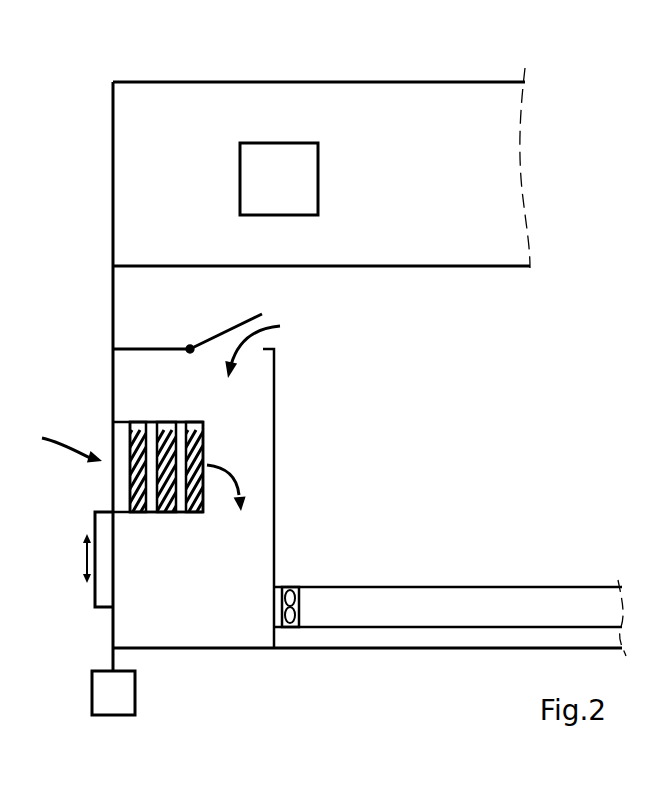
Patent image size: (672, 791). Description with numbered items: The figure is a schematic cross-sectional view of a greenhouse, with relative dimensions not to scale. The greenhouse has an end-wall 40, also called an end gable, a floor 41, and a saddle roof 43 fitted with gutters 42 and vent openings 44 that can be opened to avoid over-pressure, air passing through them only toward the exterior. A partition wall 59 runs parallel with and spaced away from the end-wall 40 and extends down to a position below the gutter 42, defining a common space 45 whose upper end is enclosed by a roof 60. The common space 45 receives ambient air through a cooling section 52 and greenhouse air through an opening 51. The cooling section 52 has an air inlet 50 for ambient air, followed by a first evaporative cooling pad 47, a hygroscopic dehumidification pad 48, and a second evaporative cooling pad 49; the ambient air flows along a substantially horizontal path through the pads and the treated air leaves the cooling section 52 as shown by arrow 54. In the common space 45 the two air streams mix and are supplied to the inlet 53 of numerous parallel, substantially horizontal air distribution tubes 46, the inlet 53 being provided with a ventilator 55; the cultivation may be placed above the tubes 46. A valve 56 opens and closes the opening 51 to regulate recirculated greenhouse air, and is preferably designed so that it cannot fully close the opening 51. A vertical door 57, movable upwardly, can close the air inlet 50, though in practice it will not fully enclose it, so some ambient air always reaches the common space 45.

The end-wall 40 is at (112, 333).
The floor 41 is at (232, 650).
The gutter 42 is at (508, 268).
The saddle roof 43 is at (362, 82).
The vent opening 44 is at (278, 145).
The common space 45 is at (125, 628).
The air distribution tube 46 is at (450, 615).
The first evaporative cooling pad 47 is at (140, 471).
The hygroscopic dehumidification pad 48 is at (203, 435).
The second evaporative cooling pad 49 is at (153, 438).
The air inlet 50 is at (115, 490).
The opening 51 is at (243, 350).
The cooling section 52 is at (152, 422).
The inlet 53 is at (274, 604).
The arrow 54 is at (247, 495).
The ventilator 55 is at (287, 628).
The valve 56 is at (213, 335).
The vertical door 57 is at (102, 592).
The partition wall 59 is at (275, 373).
The roof 60 is at (155, 351).